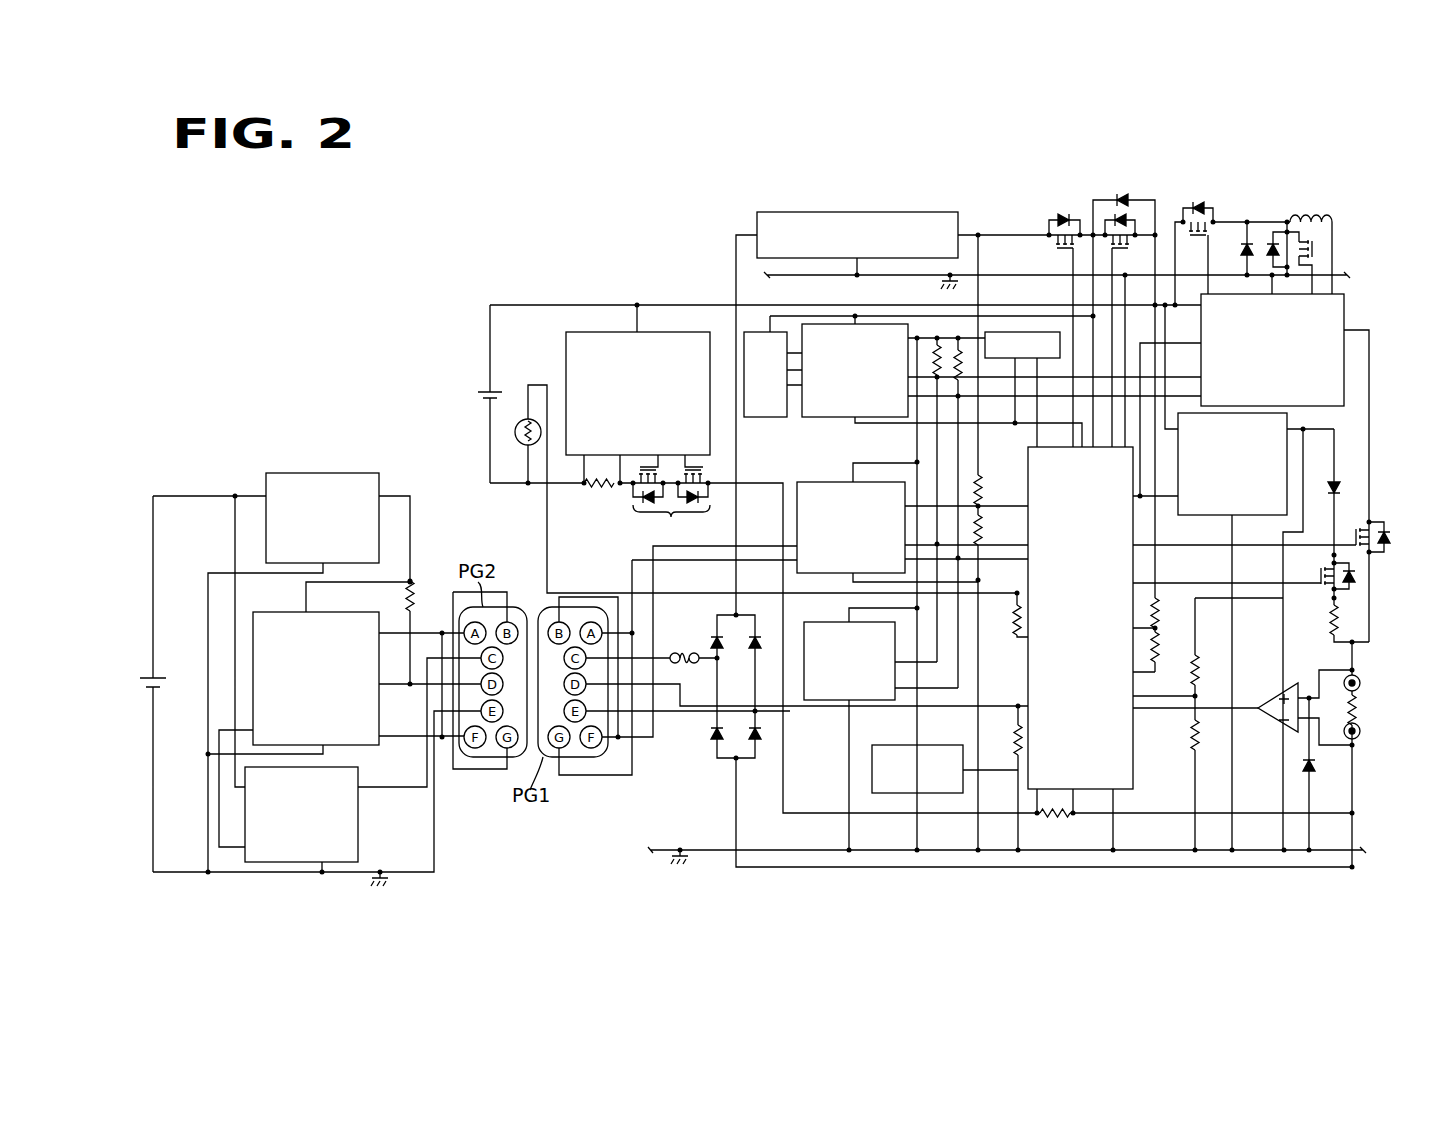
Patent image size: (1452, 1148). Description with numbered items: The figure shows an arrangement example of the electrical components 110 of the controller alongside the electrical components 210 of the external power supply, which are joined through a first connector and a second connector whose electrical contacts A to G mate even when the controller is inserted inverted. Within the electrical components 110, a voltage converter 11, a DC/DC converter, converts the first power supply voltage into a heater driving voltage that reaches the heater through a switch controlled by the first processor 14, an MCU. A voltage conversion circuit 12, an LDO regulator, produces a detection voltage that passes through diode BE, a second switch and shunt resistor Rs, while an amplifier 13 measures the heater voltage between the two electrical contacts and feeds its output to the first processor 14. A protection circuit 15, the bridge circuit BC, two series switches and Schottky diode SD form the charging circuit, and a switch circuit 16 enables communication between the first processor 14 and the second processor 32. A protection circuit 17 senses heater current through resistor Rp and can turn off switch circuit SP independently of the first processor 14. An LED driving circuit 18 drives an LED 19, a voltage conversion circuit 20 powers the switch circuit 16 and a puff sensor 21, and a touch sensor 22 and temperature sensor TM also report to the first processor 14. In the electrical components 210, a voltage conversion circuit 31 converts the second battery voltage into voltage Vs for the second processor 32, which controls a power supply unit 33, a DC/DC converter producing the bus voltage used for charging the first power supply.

The electrical components 110 is at (626, 256).
The electrical components 210 is at (201, 451).
The voltage converter 11 is at (1344, 372).
The voltage conversion circuit 12 is at (1180, 517).
The amplifier 13 is at (1273, 698).
The first processor 14 is at (1133, 770).
The protection circuit 15 is at (757, 226).
The switch circuit 16 is at (805, 470).
The protection circuit 17 is at (566, 370).
The LED driving circuit 18 is at (835, 418).
The LED 19 is at (770, 418).
The voltage conversion circuit 20 is at (1020, 332).
The puff sensor 21 is at (834, 622).
The touch sensor 22 is at (891, 745).
The voltage conversion circuit 31 is at (282, 462).
The second processor 32 is at (291, 613).
The power supply unit 33 is at (358, 850).